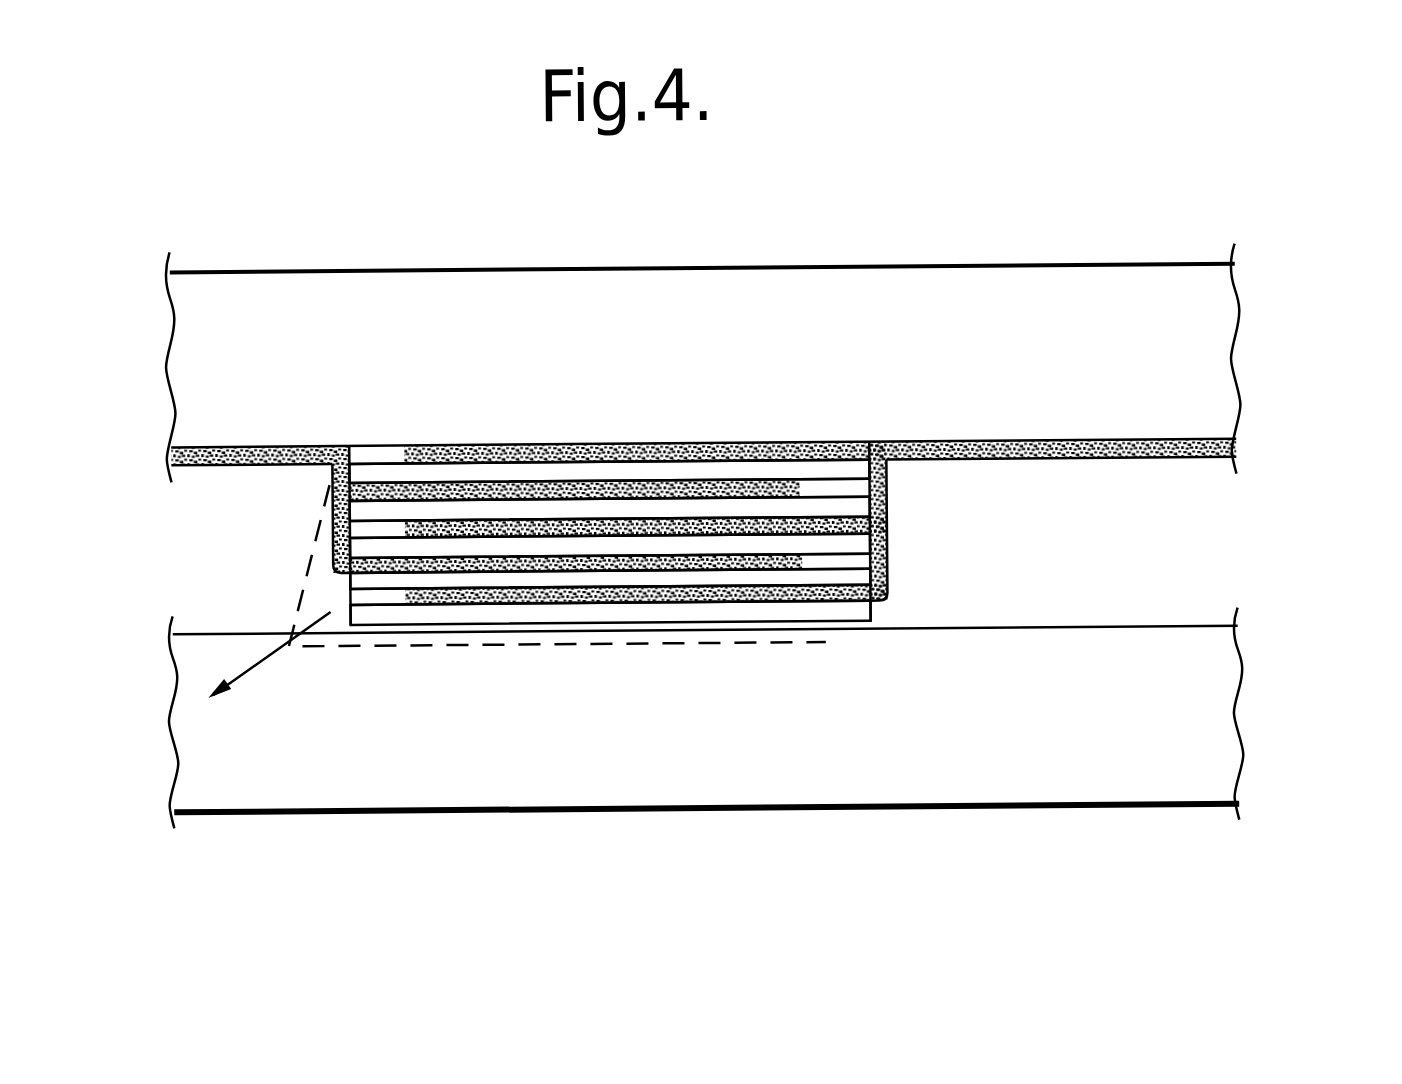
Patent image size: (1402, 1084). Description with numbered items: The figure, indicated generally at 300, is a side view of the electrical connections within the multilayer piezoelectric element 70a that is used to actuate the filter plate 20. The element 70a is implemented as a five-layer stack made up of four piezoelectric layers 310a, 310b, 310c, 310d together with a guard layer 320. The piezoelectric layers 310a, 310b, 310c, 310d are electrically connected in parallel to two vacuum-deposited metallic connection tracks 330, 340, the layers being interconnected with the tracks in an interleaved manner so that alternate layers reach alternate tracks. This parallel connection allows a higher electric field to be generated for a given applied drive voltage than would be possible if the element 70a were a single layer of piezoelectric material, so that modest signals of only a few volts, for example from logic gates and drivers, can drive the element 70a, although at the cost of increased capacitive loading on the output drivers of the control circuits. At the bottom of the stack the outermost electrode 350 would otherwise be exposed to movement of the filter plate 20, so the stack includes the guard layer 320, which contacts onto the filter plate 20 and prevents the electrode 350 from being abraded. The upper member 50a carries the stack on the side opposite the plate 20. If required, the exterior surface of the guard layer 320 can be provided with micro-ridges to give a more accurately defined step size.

The electrical connections illustration 300 is at (1166, 197).
The upper member 50a is at (965, 350).
The filter plate 20 is at (715, 732).
The metallic connection track 330 is at (207, 441).
The metallic connection track 340 is at (1187, 440).
The piezoelectric element 70a is at (935, 475).
The piezoelectric layer 310a is at (697, 466).
The piezoelectric layer 310b is at (590, 504).
The piezoelectric layer 310c is at (523, 545).
The piezoelectric layer 310d is at (488, 578).
The outermost electrode 350 is at (470, 597).
The guard layer 320 is at (828, 613).